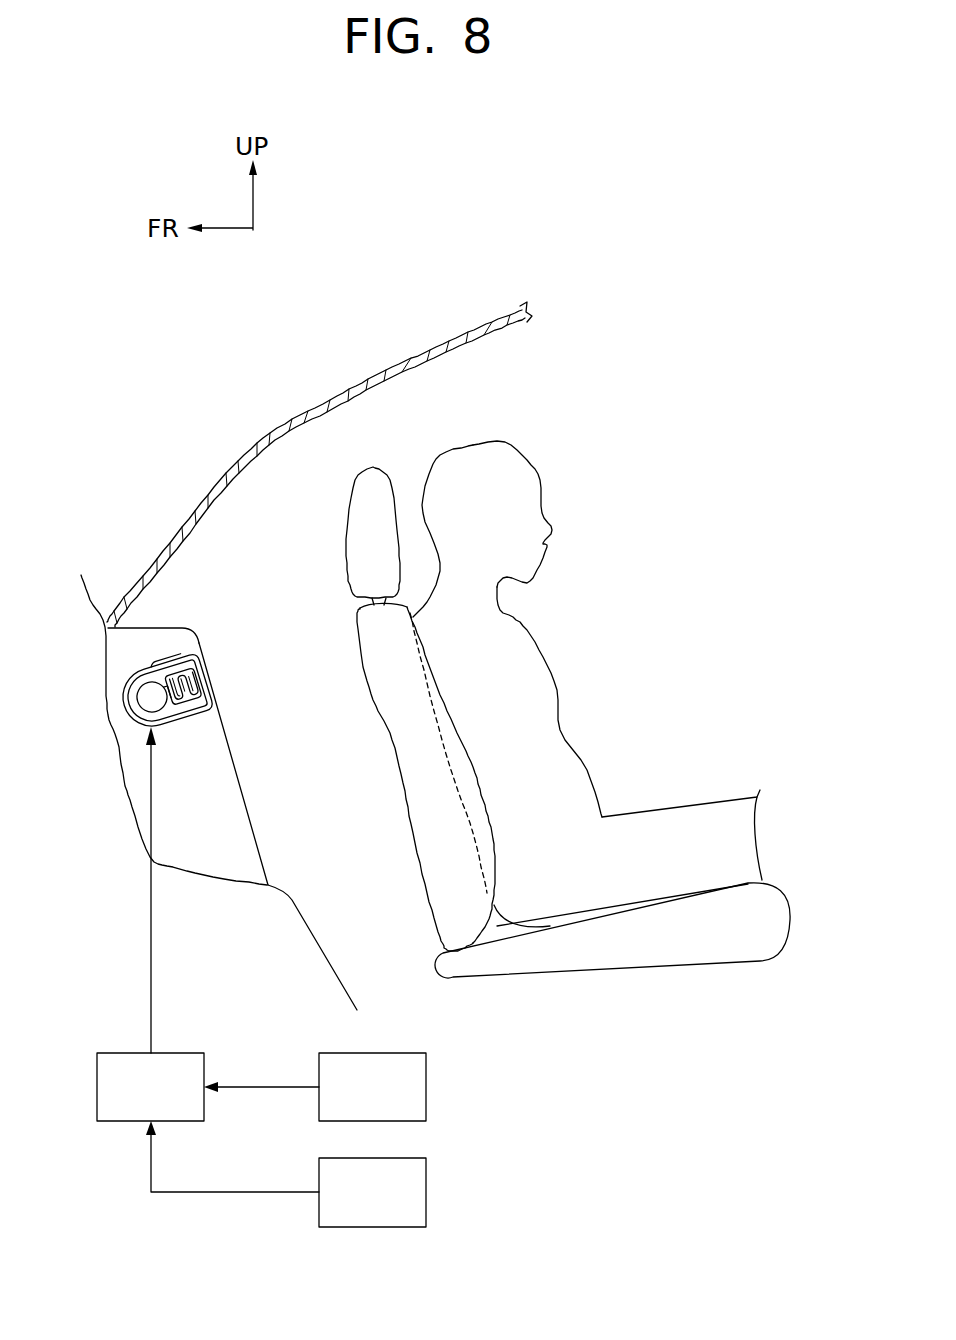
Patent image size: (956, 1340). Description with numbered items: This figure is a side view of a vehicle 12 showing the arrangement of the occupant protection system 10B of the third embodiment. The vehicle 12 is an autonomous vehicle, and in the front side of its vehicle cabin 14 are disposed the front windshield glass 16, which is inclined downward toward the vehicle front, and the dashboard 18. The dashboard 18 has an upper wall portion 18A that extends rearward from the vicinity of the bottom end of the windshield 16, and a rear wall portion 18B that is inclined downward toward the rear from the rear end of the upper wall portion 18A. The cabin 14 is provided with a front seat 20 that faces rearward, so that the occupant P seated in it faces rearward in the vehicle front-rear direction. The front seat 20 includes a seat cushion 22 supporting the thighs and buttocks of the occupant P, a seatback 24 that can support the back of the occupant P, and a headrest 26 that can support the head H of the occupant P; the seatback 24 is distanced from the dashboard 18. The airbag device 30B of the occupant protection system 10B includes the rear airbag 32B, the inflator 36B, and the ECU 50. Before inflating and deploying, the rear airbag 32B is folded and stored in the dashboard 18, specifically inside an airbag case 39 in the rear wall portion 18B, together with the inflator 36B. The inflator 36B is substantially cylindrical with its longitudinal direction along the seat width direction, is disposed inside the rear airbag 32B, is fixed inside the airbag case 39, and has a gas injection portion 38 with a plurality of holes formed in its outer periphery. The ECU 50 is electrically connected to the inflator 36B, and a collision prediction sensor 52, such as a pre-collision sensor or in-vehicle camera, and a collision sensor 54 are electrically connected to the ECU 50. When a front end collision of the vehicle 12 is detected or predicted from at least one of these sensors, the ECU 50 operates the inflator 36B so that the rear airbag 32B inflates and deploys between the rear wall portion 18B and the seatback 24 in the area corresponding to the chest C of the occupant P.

The vehicle 12 is at (118, 375).
The vehicle cabin 14 is at (454, 385).
The front windshield glass 16 is at (502, 316).
The dashboard 18 is at (227, 674).
The upper wall portion 18A is at (190, 626).
The rear wall portion 18B is at (255, 830).
The front seat 20 is at (593, 707).
The seat cushion 22 is at (765, 937).
The seatback 24 is at (430, 837).
The headrest 26 is at (371, 460).
The occupant protection system 10B is at (191, 691).
The airbag device 30B is at (168, 691).
The rear airbag 32B is at (207, 690).
The inflator 36B is at (130, 727).
The gas injection portion 38 is at (165, 725).
The airbag case 39 is at (163, 672).
The ECU 50 is at (190, 1055).
The collision prediction sensor 52 is at (415, 1055).
The collision sensor 54 is at (415, 1160).
The head H is at (518, 477).
The occupant P is at (515, 617).
The chest C is at (540, 670).